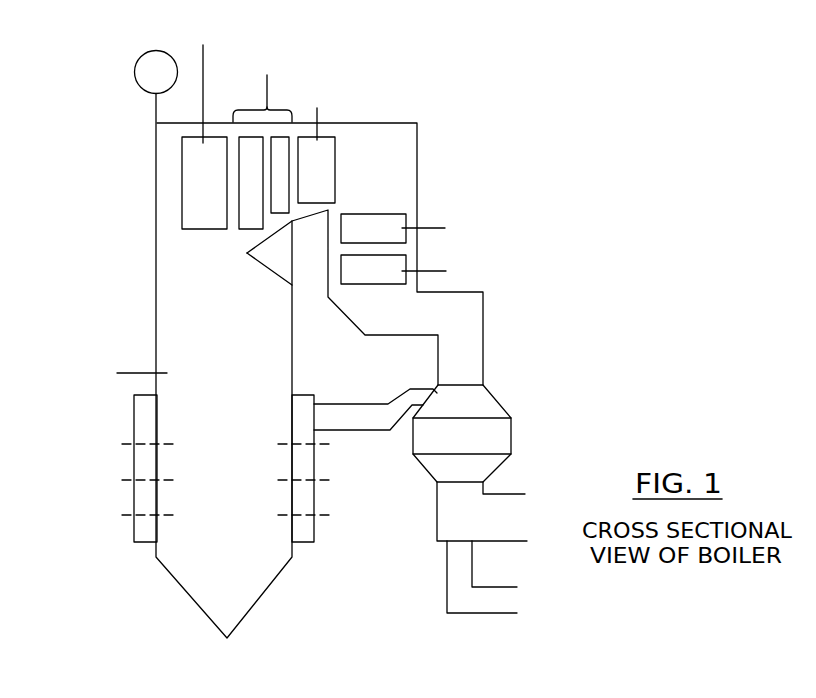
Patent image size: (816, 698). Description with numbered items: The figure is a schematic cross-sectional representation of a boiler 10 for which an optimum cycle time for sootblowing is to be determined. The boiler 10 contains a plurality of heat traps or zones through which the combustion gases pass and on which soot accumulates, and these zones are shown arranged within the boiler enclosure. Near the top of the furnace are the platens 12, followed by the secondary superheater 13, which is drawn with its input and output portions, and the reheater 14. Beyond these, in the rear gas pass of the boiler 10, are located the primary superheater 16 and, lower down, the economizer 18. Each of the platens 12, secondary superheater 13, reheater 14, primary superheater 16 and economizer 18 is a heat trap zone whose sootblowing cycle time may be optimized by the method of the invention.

The boiler 10 is at (151, 339).
The platens 12 is at (182, 173).
The secondary superheater 13 is at (248, 230).
The reheater 14 is at (335, 167).
The primary superheater 16 is at (392, 213).
The economizer 18 is at (358, 285).